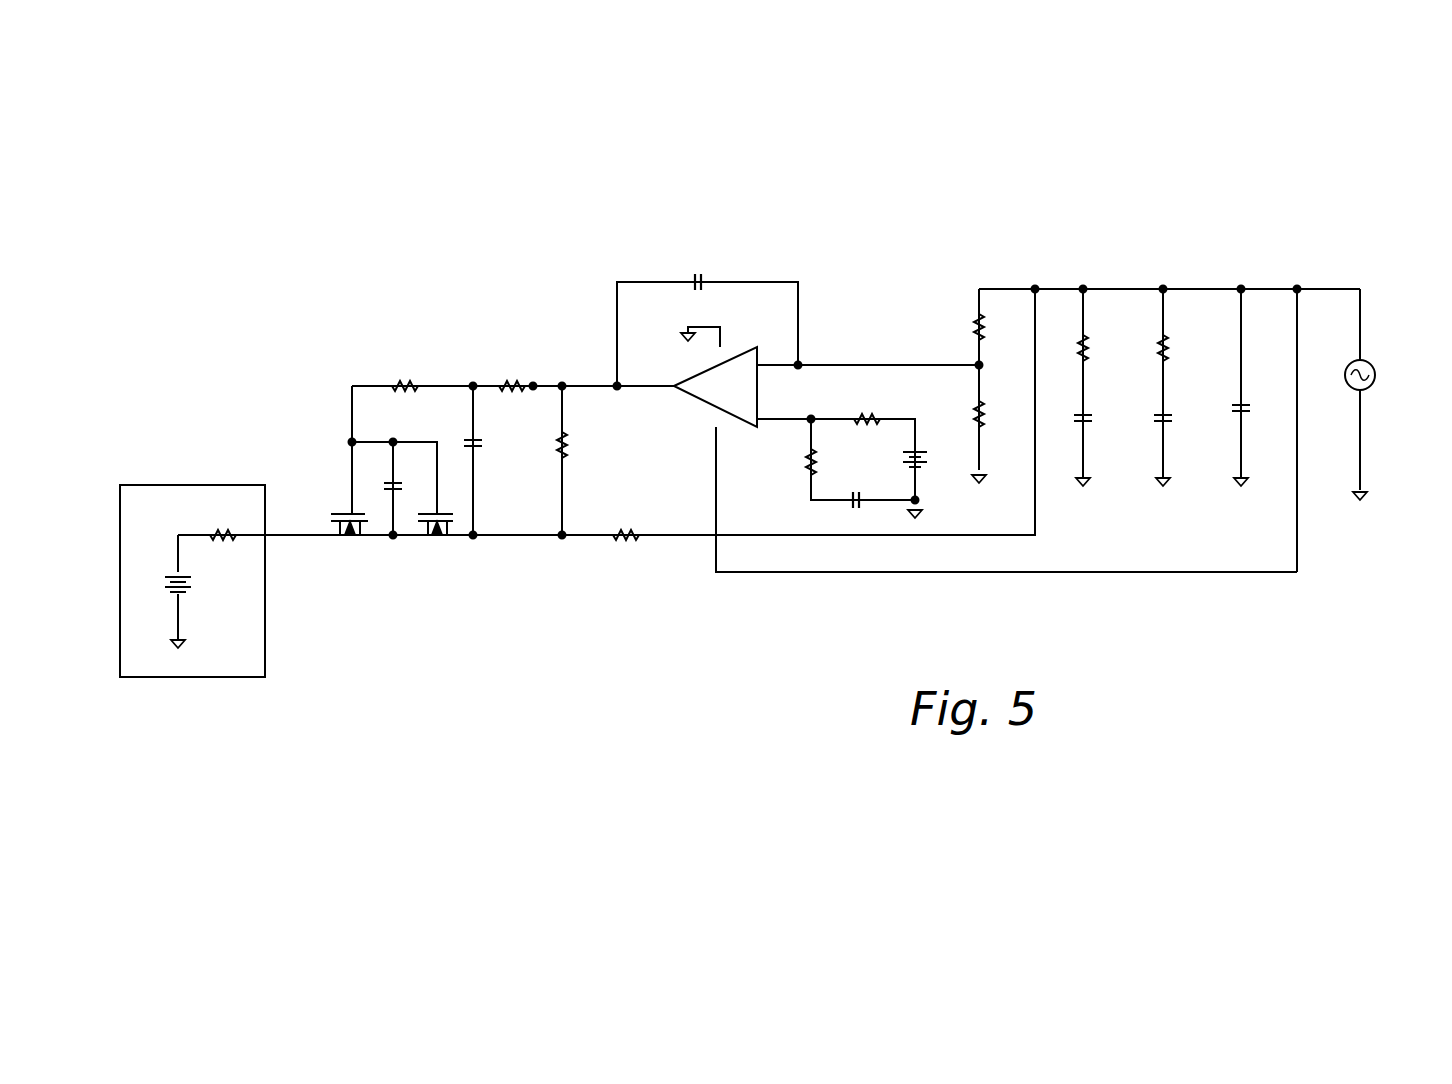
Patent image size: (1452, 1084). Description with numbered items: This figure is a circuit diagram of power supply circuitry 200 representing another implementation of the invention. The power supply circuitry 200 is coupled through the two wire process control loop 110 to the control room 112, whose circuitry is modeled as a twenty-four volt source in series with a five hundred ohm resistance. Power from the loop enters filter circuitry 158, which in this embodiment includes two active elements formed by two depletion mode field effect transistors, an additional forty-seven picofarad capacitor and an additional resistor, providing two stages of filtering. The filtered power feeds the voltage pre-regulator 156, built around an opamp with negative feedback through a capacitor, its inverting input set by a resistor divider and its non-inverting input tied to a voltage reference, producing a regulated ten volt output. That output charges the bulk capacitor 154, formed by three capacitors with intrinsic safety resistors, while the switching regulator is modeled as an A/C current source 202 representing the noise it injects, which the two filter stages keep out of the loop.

The two wire process control loop 110 is at (276, 537).
The control room 112 is at (168, 678).
The bulk capacitor 154 is at (1133, 590).
The voltage pre-regulator 156 is at (858, 588).
The filter circuitry 158 is at (421, 582).
The power supply circuitry 200 is at (646, 636).
The A/C current source 202 is at (1347, 359).